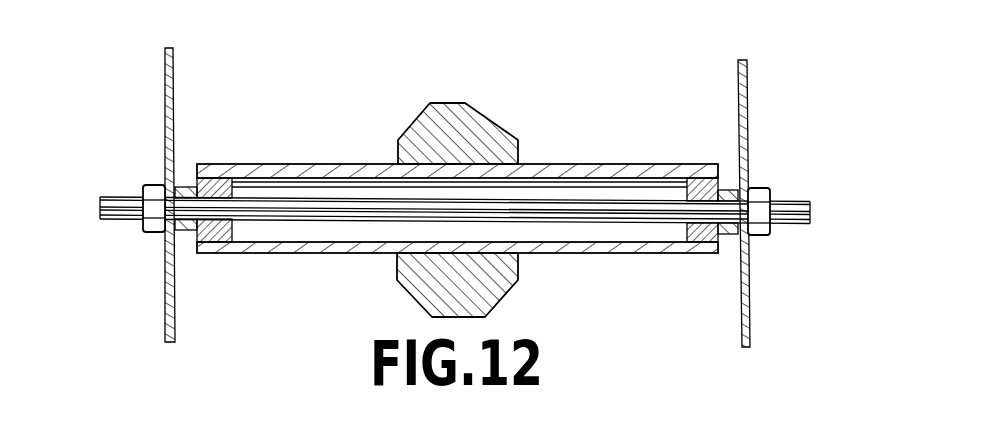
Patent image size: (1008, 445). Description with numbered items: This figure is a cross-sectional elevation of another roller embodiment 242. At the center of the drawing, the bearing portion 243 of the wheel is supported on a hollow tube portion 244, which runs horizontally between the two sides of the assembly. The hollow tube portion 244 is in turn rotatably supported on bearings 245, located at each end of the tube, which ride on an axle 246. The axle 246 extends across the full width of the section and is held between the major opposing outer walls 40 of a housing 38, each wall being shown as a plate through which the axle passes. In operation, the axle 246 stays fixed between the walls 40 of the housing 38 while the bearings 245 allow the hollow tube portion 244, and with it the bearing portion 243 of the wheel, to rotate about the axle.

The housing 38 is at (756, 96).
The major opposing outer walls 40 is at (167, 310).
The roller embodiment 242 is at (640, 82).
The bearing portion 243 is at (488, 90).
The hollow tube portion 244 is at (552, 164).
The bearings 245 is at (202, 253).
The axle 246 is at (123, 205).